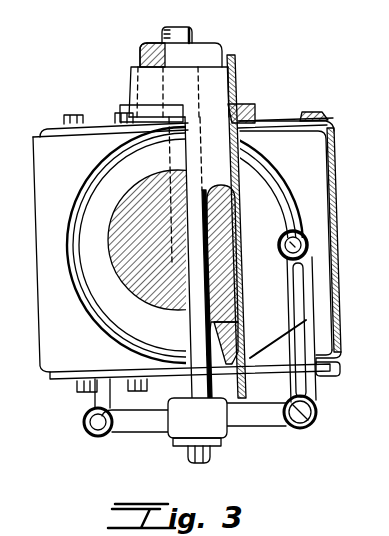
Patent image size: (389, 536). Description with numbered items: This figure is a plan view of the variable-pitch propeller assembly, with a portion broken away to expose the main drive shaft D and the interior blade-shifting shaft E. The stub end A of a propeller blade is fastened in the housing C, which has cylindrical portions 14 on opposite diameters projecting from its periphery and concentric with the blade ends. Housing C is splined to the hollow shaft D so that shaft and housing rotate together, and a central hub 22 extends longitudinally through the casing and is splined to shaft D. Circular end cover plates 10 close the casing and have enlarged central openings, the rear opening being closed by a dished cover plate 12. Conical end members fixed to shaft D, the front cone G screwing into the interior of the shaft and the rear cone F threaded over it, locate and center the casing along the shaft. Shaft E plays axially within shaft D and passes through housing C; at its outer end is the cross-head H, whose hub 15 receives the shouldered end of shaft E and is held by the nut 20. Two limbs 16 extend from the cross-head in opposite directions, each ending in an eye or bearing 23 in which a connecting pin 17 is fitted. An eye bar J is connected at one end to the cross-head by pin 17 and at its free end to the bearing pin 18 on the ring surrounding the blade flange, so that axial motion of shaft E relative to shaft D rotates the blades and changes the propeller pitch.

The stub end of propeller blade A is at (148, 278).
The housing C is at (45, 148).
The main drive shaft D is at (148, 58).
The blade-shifting shaft E is at (190, 28).
The rear cone F is at (237, 93).
The front cone G is at (241, 376).
The cross-head H is at (186, 430).
The eye bar J is at (300, 331).
The circular end cover plate 10 is at (292, 120).
The rear circular dished cover plate 12 is at (328, 371).
The cylindrical portion 14 is at (86, 190).
The hub 15 is at (226, 440).
The limb 16 is at (135, 424).
The connecting pin 17 is at (317, 418).
The bearing pin 18 is at (309, 245).
The nut 20 is at (190, 462).
The central hub 22 is at (251, 320).
The eye or bearing 23 is at (90, 432).